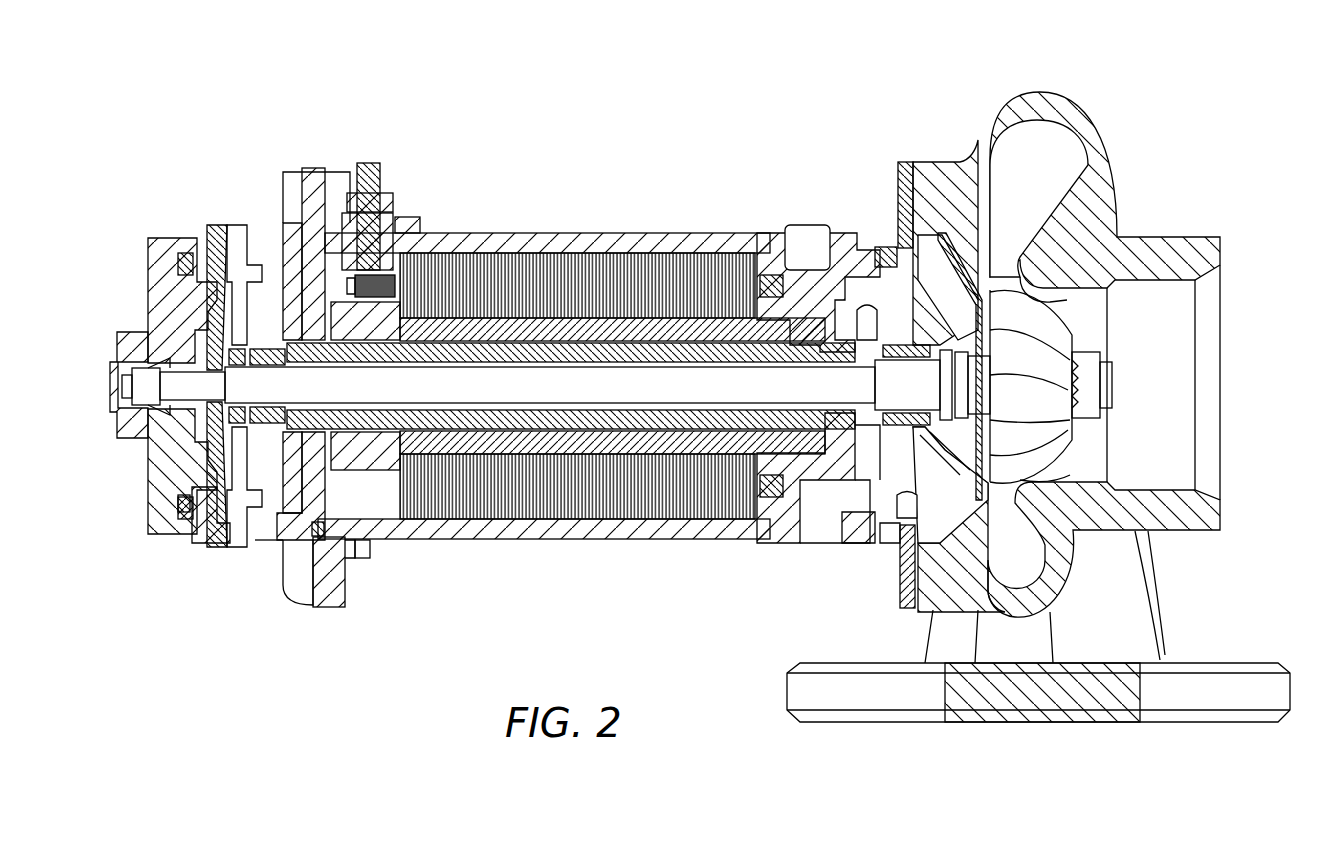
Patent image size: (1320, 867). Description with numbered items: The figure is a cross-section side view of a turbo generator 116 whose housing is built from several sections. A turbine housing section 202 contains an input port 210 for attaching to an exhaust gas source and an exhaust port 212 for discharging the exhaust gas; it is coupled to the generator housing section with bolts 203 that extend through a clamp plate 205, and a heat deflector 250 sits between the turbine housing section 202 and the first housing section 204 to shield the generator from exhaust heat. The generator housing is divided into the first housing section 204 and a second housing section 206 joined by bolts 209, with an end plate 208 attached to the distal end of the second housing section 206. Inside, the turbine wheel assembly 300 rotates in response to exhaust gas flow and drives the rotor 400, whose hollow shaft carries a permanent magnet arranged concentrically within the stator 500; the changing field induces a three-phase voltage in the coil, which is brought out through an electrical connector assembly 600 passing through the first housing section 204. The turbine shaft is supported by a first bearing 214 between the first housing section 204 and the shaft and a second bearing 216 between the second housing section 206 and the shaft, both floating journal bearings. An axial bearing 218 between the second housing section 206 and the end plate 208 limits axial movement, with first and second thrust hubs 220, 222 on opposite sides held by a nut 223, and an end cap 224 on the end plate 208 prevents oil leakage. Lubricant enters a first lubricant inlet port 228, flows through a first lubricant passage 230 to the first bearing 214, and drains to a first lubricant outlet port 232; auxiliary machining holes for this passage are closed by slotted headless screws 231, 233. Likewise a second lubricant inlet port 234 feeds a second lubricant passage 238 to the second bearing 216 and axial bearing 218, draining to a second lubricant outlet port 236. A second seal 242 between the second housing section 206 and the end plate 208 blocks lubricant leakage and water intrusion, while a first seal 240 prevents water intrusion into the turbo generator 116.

The turbo generator 116 is at (812, 95).
The turbine housing section 202 is at (1103, 135).
The bolts 203 is at (892, 540).
The first housing section 204 is at (642, 233).
The clamp plate 205 is at (905, 608).
The second housing section 206 is at (320, 165).
The end plate 208 is at (155, 245).
The bolts 209 is at (372, 548).
The input port 210 is at (1055, 775).
The exhaust port 212 is at (1252, 362).
The first bearing 214 is at (938, 200).
The second bearing 216 is at (270, 230).
The axial bearing 218 is at (200, 275).
The first thrust hub 220 is at (190, 405).
The second thrust hub 222 is at (178, 415).
The nut 223 is at (147, 404).
The end cap 224 is at (108, 368).
The first lubricant inlet port 228 is at (788, 225).
The first lubricant passage 230 is at (832, 245).
The slotted headless screw 231 is at (880, 255).
The first lubricant outlet port 232 is at (842, 530).
The slotted headless screw 233 is at (765, 250).
The second lubricant inlet port 234 is at (258, 222).
The second lubricant outlet port 236 is at (255, 545).
The second lubricant passage 238 is at (228, 300).
The first seal 240 is at (318, 530).
The second seal 242 is at (183, 513).
The heat deflector 250 is at (945, 225).
The turbine wheel assembly 300 is at (1000, 255).
The rotor 400 is at (592, 345).
The stator 500 is at (490, 255).
The electrical connector assembly 600 is at (373, 160).